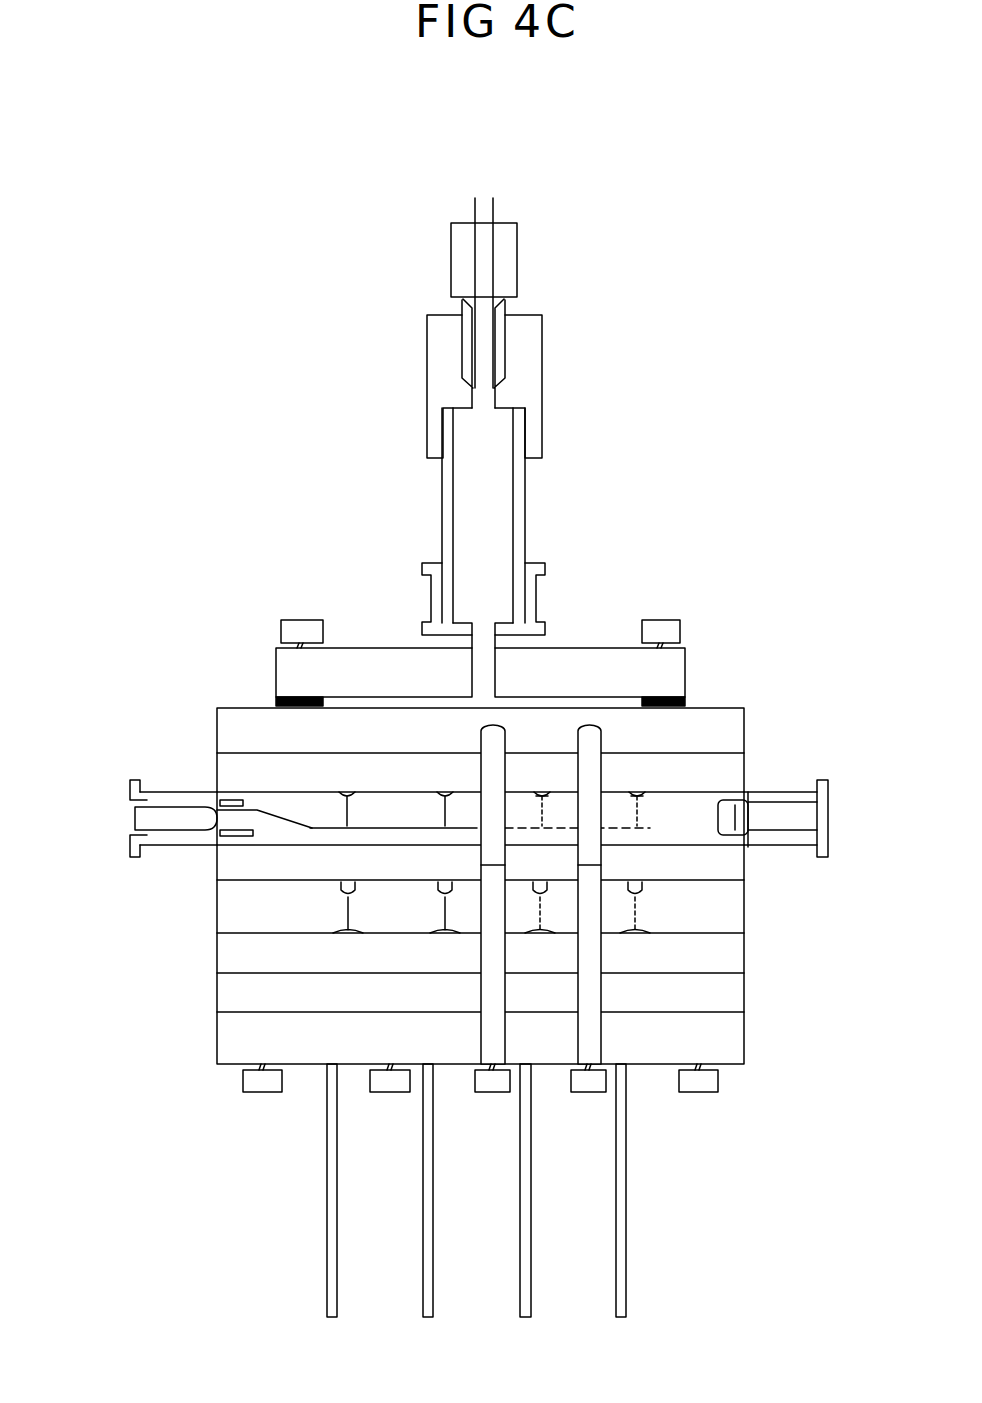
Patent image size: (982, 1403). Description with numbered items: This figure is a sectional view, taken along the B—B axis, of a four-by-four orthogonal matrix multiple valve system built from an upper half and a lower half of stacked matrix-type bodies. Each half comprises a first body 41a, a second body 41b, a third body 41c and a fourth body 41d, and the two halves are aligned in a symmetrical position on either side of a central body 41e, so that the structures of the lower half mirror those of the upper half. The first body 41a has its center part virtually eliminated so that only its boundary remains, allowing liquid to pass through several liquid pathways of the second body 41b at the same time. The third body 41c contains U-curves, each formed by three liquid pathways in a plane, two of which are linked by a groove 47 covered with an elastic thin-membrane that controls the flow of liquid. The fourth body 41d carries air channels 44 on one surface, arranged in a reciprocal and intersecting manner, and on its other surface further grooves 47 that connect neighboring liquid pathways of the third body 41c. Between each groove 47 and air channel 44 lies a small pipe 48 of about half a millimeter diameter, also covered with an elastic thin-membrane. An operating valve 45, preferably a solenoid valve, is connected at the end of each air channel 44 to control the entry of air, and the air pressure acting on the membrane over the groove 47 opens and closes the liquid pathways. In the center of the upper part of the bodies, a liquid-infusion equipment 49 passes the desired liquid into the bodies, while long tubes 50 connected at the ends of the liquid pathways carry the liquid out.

The liquid-infusion equipment 49 is at (437, 219).
The first body 41a is at (675, 698).
The second body 41b is at (245, 718).
The third body 41c is at (703, 780).
The fourth body 41d is at (667, 822).
The central body 41e is at (708, 867).
The groove 47 is at (347, 810).
The small pipe 48 is at (340, 793).
The operating valve 45 is at (147, 820).
The air channel 44 is at (280, 835).
The long tube 50 is at (327, 1180).